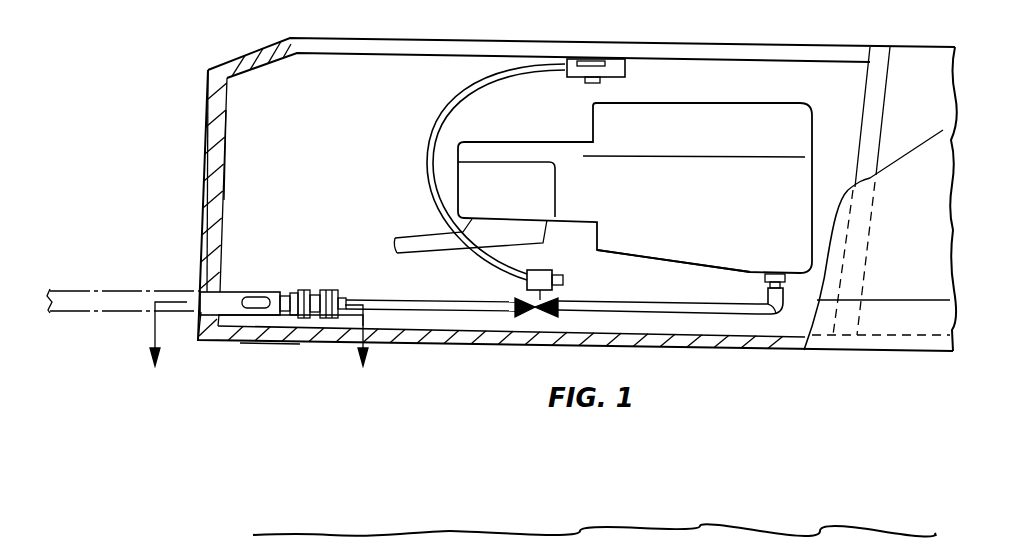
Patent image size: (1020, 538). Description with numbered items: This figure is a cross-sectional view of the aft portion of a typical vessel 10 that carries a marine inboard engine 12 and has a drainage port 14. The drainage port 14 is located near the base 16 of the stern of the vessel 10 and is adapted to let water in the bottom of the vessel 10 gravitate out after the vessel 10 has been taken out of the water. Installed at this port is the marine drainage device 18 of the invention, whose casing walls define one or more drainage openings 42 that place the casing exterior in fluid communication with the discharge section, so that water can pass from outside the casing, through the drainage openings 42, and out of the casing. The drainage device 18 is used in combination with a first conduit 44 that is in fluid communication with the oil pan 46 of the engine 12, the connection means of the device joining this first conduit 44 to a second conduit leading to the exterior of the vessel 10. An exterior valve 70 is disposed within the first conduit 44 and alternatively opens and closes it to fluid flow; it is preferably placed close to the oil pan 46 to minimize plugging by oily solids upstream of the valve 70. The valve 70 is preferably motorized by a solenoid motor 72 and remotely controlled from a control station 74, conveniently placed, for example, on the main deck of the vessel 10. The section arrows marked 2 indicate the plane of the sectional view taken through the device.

The vessel 10 is at (523, 13).
The marine inboard engine 12 is at (762, 85).
The drainage port 14 is at (188, 296).
The base 16 is at (236, 343).
The marine drainage device 18 is at (258, 269).
The drainage openings 42 is at (262, 302).
The first conduit 44 is at (422, 290).
The oil pan 46 is at (630, 250).
The exterior valve 70 is at (523, 316).
The solenoid motor 72 is at (532, 272).
The control station 74 is at (612, 63).
The section line 2- 2 is at (256, 351).